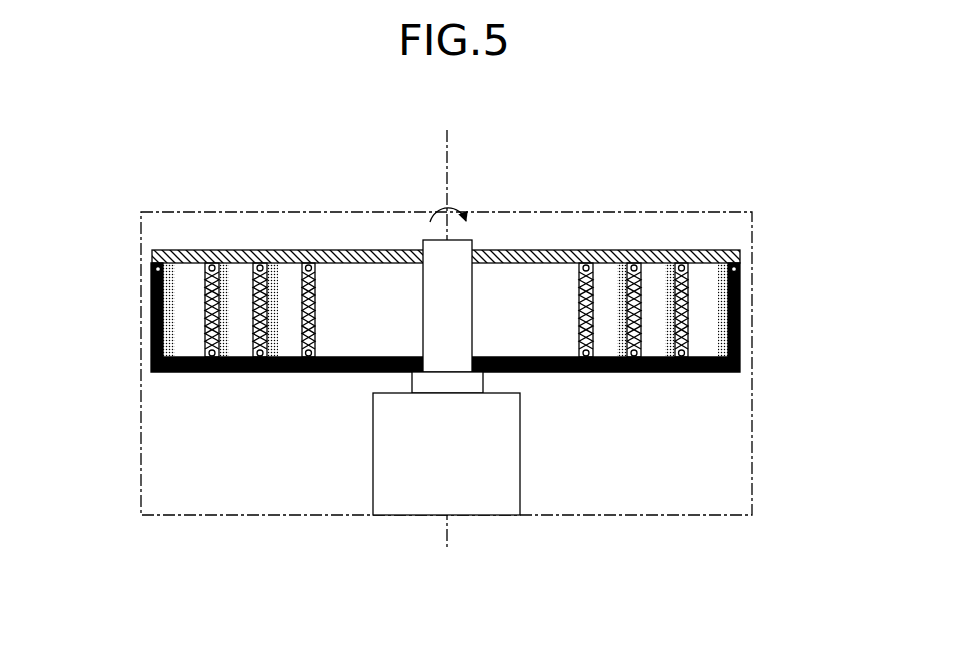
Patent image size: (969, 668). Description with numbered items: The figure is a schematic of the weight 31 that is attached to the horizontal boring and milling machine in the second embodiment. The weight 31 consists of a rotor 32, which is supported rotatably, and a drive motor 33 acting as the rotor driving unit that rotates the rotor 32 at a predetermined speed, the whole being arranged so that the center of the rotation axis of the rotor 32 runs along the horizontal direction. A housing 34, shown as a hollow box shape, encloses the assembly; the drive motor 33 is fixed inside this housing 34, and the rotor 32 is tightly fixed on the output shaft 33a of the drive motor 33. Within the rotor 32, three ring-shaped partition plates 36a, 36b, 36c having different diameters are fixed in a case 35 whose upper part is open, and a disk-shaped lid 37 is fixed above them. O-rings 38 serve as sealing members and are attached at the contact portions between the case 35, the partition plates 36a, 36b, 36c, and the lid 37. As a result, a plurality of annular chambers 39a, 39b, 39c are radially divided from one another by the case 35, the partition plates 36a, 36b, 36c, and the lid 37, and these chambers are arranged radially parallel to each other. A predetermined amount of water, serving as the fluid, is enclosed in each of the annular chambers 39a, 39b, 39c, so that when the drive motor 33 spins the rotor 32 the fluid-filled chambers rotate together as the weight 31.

The weight 31 is at (139, 145).
The rotor 32 is at (713, 249).
The drive motor 33 is at (523, 496).
The output shaft 33a is at (467, 249).
The housing 34 is at (135, 481).
The case 35 is at (183, 365).
The partition plate 36a is at (207, 292).
The partition plate 36b is at (254, 292).
The partition plate 36c is at (302, 292).
The lid 37 is at (535, 252).
The O-ring 38 is at (155, 269).
The annular chamber 39a is at (183, 273).
The annular chamber 39b is at (237, 350).
The annular chamber 39c is at (289, 350).